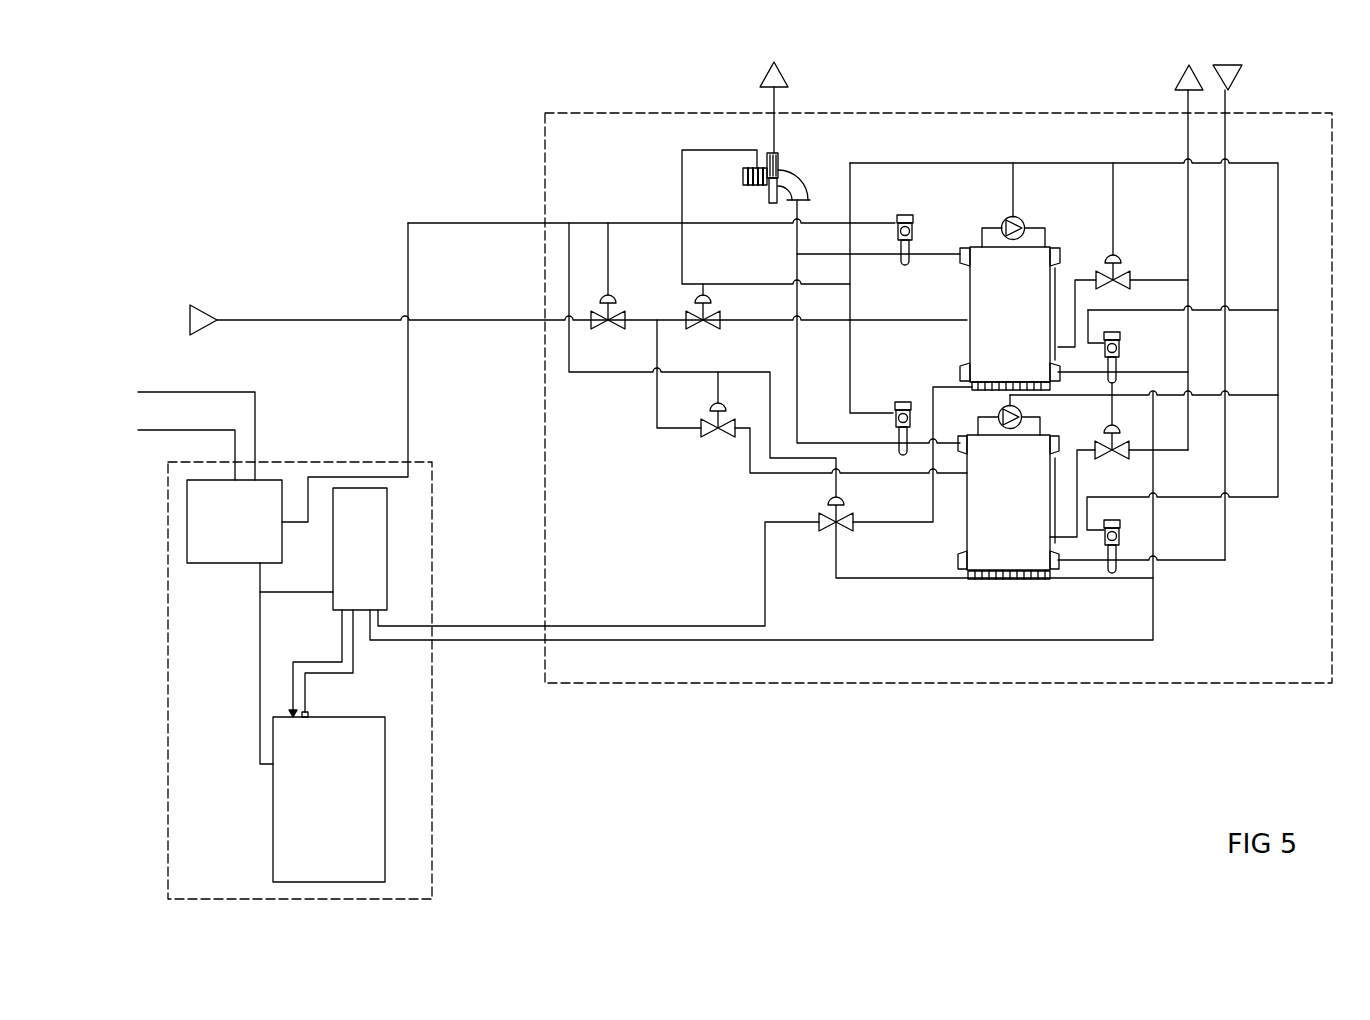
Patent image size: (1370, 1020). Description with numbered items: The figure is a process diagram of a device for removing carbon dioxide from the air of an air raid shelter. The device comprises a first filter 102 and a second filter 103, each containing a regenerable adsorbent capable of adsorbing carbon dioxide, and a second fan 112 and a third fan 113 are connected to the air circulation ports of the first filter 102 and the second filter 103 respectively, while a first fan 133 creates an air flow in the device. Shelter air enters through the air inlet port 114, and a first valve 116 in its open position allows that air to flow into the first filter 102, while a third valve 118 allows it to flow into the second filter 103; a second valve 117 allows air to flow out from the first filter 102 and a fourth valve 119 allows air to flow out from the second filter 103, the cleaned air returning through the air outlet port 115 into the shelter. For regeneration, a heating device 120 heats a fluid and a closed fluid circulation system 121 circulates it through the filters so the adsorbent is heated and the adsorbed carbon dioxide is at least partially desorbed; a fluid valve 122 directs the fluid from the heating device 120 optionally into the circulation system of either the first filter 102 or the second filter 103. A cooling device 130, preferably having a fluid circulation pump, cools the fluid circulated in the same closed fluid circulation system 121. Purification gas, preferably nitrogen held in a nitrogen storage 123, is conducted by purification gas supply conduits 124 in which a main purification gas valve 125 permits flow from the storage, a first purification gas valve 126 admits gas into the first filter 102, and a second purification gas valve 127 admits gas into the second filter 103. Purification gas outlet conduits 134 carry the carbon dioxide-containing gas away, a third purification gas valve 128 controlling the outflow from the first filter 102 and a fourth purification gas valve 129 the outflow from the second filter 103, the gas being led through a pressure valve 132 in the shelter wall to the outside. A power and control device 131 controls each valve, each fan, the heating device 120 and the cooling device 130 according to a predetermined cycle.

The first filter 102 is at (1010, 314).
The second filter 103 is at (1008, 502).
The second fan 112 is at (1027, 205).
The third fan 113 is at (1030, 415).
The air inlet port 114 is at (1255, 311).
The air outlet port 115 is at (748, 105).
The first valve 116 is at (1137, 355).
The second valve 117 is at (900, 223).
The third valve 118 is at (1126, 533).
The fourth valve 119 is at (898, 414).
The heating device 120 is at (360, 549).
The closed fluid circulation system 121 is at (960, 383).
The fluid valve 122 is at (858, 508).
The nitrogen storage 123 is at (171, 322).
The purification gas supply conduits 124 is at (592, 335).
The main purification gas valve 125 is at (608, 329).
The first purification gas valve 126 is at (700, 329).
The second purification gas valve 127 is at (716, 437).
The third purification gas valve 128 is at (1123, 297).
The fourth purification gas valve 129 is at (1119, 481).
The cooling device 130 is at (329, 799).
The power and control device 131 is at (234, 521).
The pressure valve 132 is at (1159, 256).
The first fan 133 is at (789, 170).
The purification gas outlet conduits 134 is at (1146, 209).